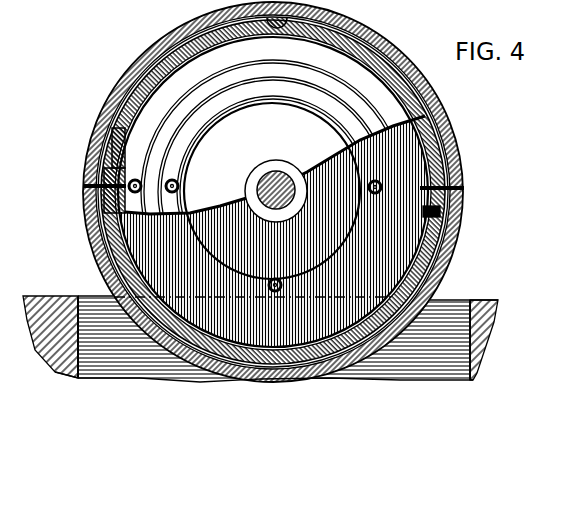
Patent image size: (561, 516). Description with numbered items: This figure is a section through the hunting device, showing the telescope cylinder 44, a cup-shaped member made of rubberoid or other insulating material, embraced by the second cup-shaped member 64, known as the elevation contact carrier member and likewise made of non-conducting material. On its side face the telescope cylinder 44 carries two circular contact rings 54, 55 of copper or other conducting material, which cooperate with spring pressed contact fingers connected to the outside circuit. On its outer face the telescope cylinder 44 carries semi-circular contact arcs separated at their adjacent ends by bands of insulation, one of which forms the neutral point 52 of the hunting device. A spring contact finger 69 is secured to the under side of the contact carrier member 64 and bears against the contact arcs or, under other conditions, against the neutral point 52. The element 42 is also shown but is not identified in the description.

The telescope cylinder 44 is at (367, 50).
The elevation contact carrier member 64 is at (133, 67).
The inner supporting ring 42 is at (450, 207).
The neutral point 52 is at (107, 117).
The spring contact finger 69 is at (104, 154).
The circular contact ring 55 is at (216, 67).
The circular contact ring 54 is at (221, 105).